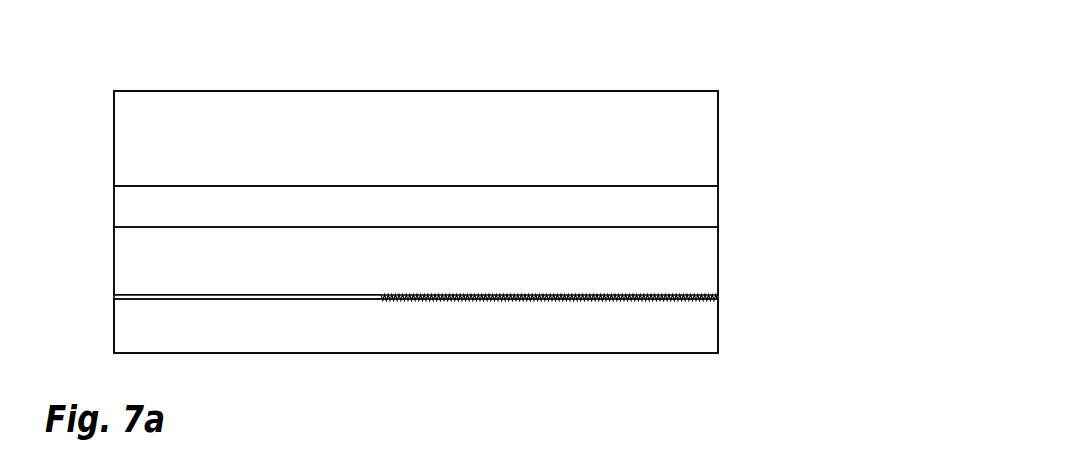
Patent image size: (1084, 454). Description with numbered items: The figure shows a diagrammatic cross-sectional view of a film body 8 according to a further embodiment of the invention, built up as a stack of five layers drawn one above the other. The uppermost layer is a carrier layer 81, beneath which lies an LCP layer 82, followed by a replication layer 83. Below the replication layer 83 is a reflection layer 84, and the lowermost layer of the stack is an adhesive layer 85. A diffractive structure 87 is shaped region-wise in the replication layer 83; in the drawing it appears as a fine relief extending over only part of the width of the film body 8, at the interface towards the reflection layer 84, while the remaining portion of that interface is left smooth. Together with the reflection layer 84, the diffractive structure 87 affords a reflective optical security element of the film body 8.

The film body 8 is at (683, 71).
The carrier layer 81 is at (707, 142).
The LCP layer 82 is at (707, 203).
The replication layer 83 is at (706, 244).
The reflection layer 84 is at (718, 298).
The adhesive layer 85 is at (705, 335).
The diffractive structure 87 is at (550, 292).